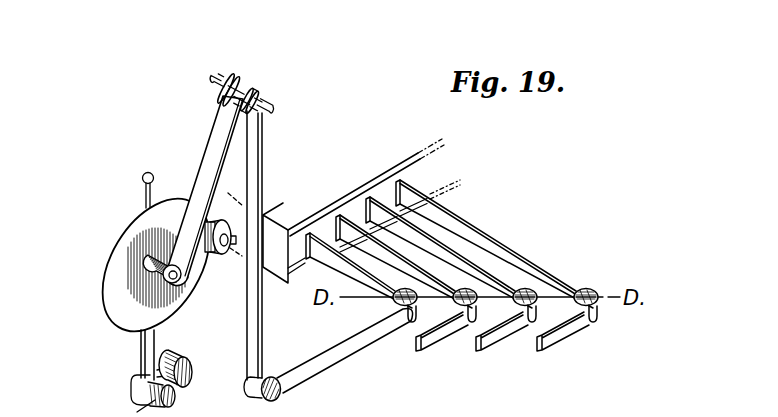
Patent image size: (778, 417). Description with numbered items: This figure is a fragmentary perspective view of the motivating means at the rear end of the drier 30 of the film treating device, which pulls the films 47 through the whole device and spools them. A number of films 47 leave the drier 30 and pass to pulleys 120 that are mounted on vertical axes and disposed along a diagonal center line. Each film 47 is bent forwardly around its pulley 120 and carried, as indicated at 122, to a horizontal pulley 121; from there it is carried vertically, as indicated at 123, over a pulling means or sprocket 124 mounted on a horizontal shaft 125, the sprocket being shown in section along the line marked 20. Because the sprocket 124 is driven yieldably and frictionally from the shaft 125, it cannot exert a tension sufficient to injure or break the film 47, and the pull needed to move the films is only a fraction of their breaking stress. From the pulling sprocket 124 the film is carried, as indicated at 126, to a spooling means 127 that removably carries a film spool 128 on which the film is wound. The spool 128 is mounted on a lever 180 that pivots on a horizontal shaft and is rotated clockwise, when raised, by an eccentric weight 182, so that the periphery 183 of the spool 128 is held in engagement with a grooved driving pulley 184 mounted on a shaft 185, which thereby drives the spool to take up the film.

The section line 20- 20 is at (211, 56).
The drier 30 is at (347, 183).
The films 47 is at (479, 273).
The pulleys 120 is at (534, 296).
The horizontal pulley 121 is at (277, 398).
The film run to horizontal pulley 122 is at (345, 351).
The vertical film run 123 is at (265, 333).
The pulling sprocket 124 is at (261, 83).
The horizontal shaft 125 is at (216, 85).
The film run to spooling means 126 is at (214, 140).
The spooling means 127 is at (138, 205).
The film spool 128 is at (115, 298).
The lever 180 is at (141, 352).
The eccentric weight 182 is at (178, 354).
The periphery of the spool 183 is at (112, 262).
The grooved driving pulley 184 is at (232, 226).
The shaft 185 is at (221, 259).